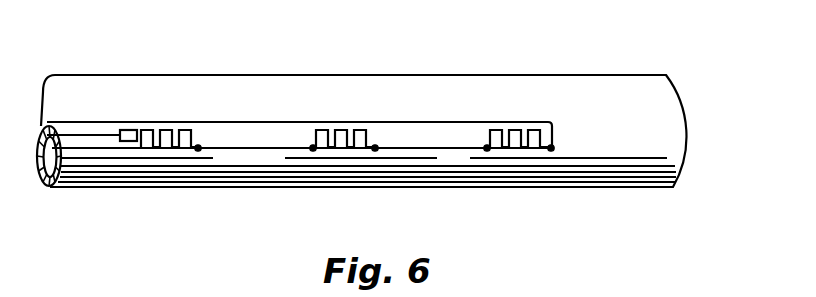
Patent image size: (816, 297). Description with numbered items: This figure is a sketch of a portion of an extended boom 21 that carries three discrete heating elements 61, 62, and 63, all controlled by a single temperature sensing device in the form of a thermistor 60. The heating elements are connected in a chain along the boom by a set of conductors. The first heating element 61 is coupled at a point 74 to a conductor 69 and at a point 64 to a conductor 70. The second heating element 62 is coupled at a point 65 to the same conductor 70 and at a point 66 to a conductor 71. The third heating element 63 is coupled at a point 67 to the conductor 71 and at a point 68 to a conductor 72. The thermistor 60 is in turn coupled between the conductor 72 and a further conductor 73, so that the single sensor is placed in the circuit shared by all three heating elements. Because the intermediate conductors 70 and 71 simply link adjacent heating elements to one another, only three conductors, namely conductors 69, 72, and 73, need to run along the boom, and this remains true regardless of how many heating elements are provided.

The extended boom 21 is at (626, 119).
The thermistor 60 is at (137, 129).
The heating element 61 is at (178, 148).
The heating element 62 is at (344, 148).
The heating element 63 is at (517, 148).
The point 64 is at (198, 146).
The point 65 is at (313, 146).
The point 66 is at (375, 146).
The point 67 is at (487, 146).
The point 68 is at (553, 148).
The conductor 69 is at (93, 150).
The conductor 70 is at (247, 149).
The conductor 71 is at (420, 149).
The conductor 72 is at (255, 121).
The conductor 73 is at (102, 134).
The point 74 is at (142, 142).